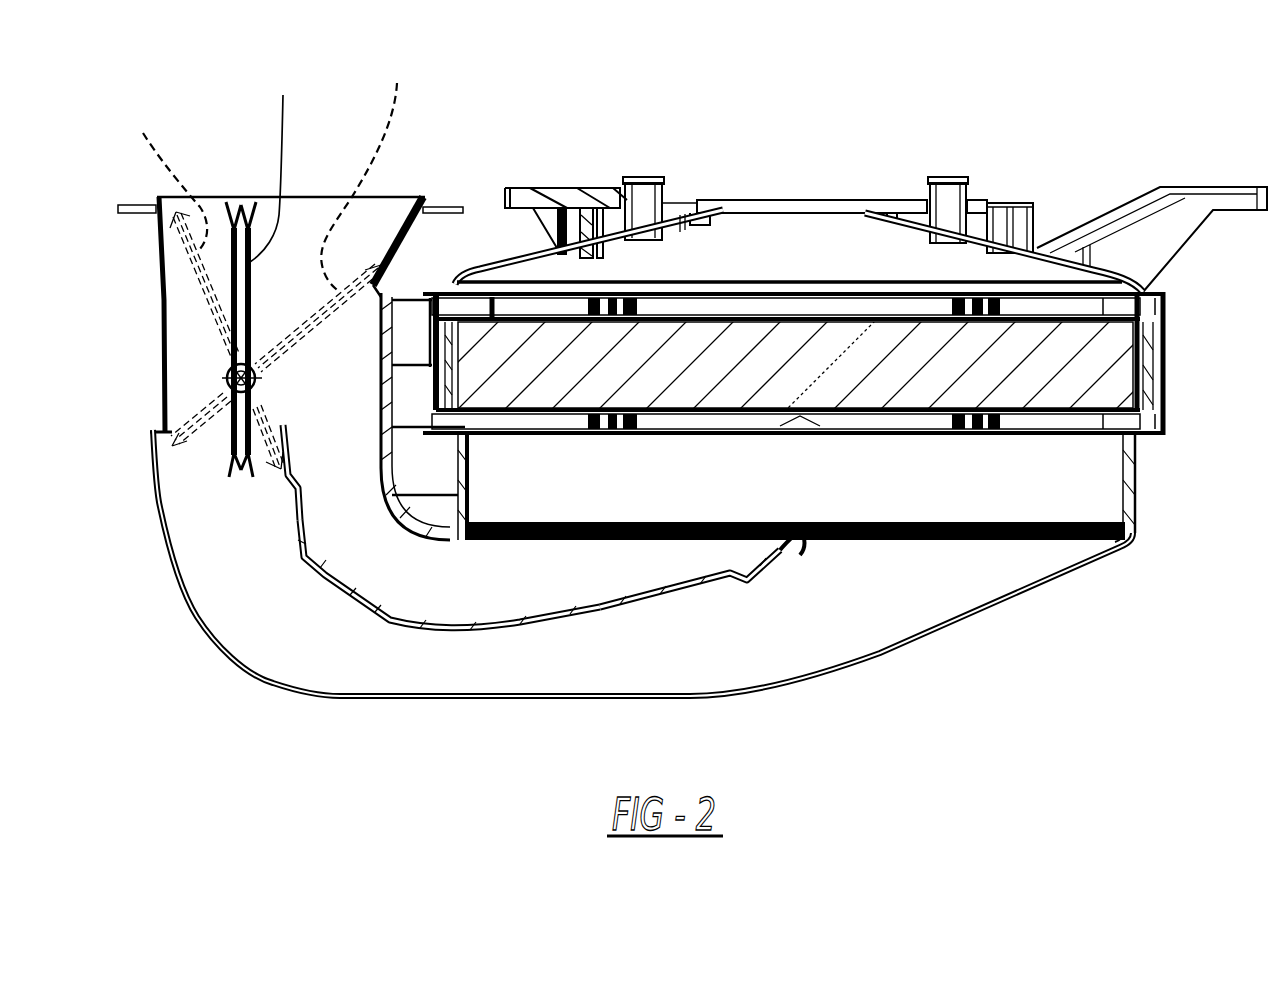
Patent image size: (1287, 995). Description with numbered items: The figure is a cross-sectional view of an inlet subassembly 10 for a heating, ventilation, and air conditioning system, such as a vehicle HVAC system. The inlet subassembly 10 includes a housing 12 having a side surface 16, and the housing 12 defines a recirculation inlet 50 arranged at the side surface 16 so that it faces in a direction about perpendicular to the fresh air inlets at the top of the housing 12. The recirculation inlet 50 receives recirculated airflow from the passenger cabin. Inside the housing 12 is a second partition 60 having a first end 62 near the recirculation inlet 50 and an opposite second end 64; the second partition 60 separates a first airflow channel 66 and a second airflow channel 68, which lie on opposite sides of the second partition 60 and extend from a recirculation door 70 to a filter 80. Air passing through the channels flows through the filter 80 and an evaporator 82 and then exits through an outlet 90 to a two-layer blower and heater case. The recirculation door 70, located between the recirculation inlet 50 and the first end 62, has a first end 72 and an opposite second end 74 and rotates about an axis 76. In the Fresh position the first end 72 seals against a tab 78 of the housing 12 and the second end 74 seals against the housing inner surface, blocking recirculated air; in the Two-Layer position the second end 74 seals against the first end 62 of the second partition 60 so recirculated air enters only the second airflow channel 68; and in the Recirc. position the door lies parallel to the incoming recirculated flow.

The inlet subassembly 10 is at (1130, 117).
The housing 12 is at (233, 650).
The side surface 16 is at (162, 274).
The recirculation inlet 50 is at (270, 258).
The second partition 60 is at (420, 630).
The first end 62 is at (280, 440).
The second end 64 is at (807, 547).
The first airflow channel 66 is at (663, 653).
The second airflow channel 68 is at (503, 573).
The recirculation door 70 is at (232, 378).
The first end 72 is at (228, 212).
The second end 74 is at (230, 468).
The axis 76 is at (233, 381).
The tab 78 is at (365, 287).
The filter 80 is at (1093, 488).
The evaporator 82 is at (1080, 364).
The outlet 90 is at (900, 230).